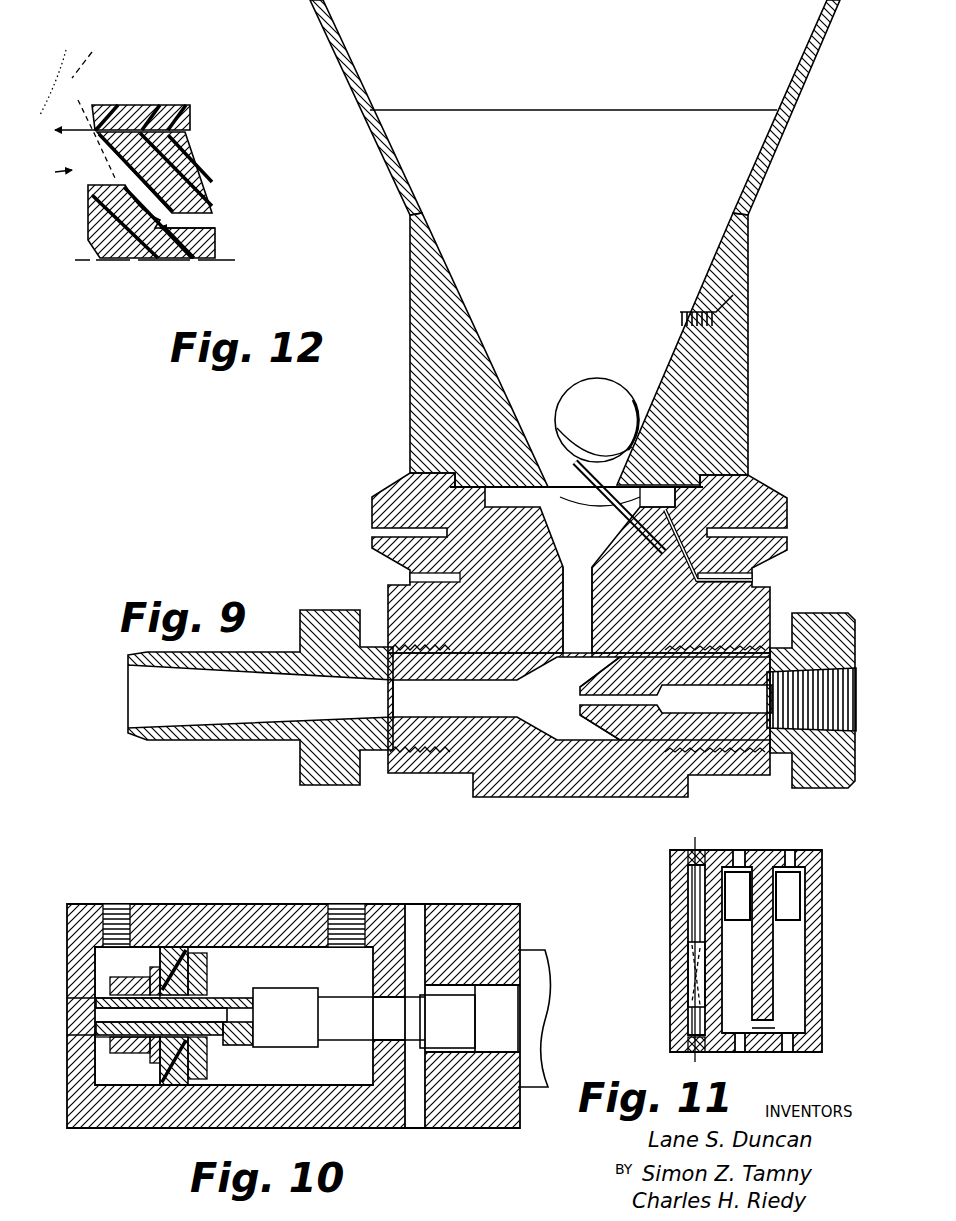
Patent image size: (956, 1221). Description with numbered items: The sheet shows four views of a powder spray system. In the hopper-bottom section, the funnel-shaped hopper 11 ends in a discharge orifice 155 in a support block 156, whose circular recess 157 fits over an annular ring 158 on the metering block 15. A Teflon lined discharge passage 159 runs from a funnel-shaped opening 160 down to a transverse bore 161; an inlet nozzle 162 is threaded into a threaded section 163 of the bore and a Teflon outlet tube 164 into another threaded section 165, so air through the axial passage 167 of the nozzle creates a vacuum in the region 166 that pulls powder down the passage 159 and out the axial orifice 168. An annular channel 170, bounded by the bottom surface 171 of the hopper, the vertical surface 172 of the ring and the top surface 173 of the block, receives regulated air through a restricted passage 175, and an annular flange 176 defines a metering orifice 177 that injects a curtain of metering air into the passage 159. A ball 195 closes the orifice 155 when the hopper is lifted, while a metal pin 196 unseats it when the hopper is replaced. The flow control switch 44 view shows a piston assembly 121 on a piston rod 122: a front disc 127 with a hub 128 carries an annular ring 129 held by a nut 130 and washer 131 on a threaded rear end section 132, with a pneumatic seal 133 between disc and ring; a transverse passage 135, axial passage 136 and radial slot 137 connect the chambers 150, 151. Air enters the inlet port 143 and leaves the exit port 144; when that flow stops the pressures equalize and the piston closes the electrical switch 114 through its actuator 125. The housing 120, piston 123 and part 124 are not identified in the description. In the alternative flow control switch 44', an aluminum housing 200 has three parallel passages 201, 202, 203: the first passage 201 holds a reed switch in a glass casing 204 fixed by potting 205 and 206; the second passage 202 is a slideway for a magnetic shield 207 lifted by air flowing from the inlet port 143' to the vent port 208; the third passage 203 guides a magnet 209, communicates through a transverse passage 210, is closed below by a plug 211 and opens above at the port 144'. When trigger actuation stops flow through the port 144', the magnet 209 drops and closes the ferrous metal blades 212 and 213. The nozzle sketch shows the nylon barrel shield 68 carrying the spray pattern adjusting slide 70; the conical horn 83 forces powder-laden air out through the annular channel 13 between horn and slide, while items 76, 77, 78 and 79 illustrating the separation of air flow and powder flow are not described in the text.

In FIG. 9, the hopper 11 is at (806, 78).
In FIG. 12, the annular channel 13 is at (112, 200).
In FIG. 9, the metering block 15 is at (383, 568).
In FIG. 10, the flow control switch 44 is at (390, 1177).
In FIG. 11, the flow control switch 44' is at (888, 843).
In FIG. 12, the nylon barrel shield 68 is at (170, 105).
In FIG. 12, the spray pattern adjusting block 70 is at (165, 178).
In FIG. 12, the travel path 76 is at (78, 74).
In FIG. 12, the direction of movement 77 is at (57, 134).
In FIG. 12, the direction of movement 78 is at (80, 144).
In FIG. 12, the edge 79 is at (113, 105).
In FIG. 12, the horn 83 is at (126, 252).
In FIG. 10, the electrical switch 114 is at (538, 1010).
In FIG. 10, the cylinder housing 120 is at (258, 912).
In FIG. 10, the piston assembly 121 is at (242, 968).
In FIG. 10, the piston rod 122 is at (339, 1017).
In FIG. 10, the piston 123 is at (416, 1027).
In FIG. 10, the cylinder wall 124 is at (386, 1058).
In FIG. 10, the actuator 125 is at (485, 1030).
In FIG. 10, the front disc 127 is at (190, 990).
In FIG. 10, the hub 128 is at (232, 1005).
In FIG. 10, the annular ring 129 is at (170, 947).
In FIG. 10, the nut 130 is at (110, 1087).
In FIG. 10, the washer 131 is at (150, 1087).
In FIG. 10, the threaded rear end section 132 is at (98, 1050).
In FIG. 10, the pneumatic seal 133 is at (207, 1065).
In FIG. 10, the transverse passage 135 is at (232, 1032).
In FIG. 10, the axial passage 136 is at (232, 1018).
In FIG. 10, the radial slot 137 is at (98, 1015).
In FIG. 10, the cylinder inlet port 143 is at (371, 909).
In FIG. 11, the inlet port 143' is at (739, 1066).
In FIG. 10, the exit port 144 is at (127, 907).
In FIG. 11, the outlet port 144' is at (801, 838).
In FIG. 10, the chamber 150 is at (342, 972).
In FIG. 10, the chamber 151 is at (112, 957).
In FIG. 9, the discharge orifice 155 is at (548, 475).
In FIG. 9, the support block 156 is at (727, 398).
In FIG. 9, the circular recess 157 is at (705, 505).
In FIG. 9, the annular ring 158 is at (700, 488).
In FIG. 9, the discharge passage 159 is at (560, 612).
In FIG. 9, the funnel-shaped opening 160 is at (590, 580).
In FIG. 9, the transverse bore 161 is at (536, 745).
In FIG. 9, the inlet nozzle 162 is at (840, 652).
In FIG. 9, the threaded section 163 is at (745, 758).
In FIG. 9, the Teflon outlet tube 164 is at (285, 745).
In FIG. 9, the threaded section 165 is at (422, 760).
In FIG. 9, the region 166 is at (572, 712).
In FIG. 9, the axial passage 167 is at (699, 703).
In FIG. 9, the axial orifice 168 is at (425, 703).
In FIG. 9, the annular channel 170 is at (655, 450).
In FIG. 9, the bottom surface 171 is at (505, 430).
In FIG. 9, the vertical surface 172 is at (390, 476).
In FIG. 9, the top surface 173 is at (500, 522).
In FIG. 9, the restricted passage 175 is at (752, 580).
In FIG. 9, the annular flange 176 is at (495, 452).
In FIG. 9, the annular metering orifice 177 is at (530, 470).
In FIG. 9, the ball 195 is at (602, 400).
In FIG. 9, the metal pin 196 is at (602, 510).
In FIG. 11, the aluminum housing 200 is at (822, 948).
In FIG. 11, the first passage 201 is at (688, 926).
In FIG. 11, the second passage 202 is at (740, 945).
In FIG. 11, the third passage 203 is at (790, 990).
In FIG. 11, the glass casing 204 is at (688, 996).
In FIG. 11, the potting 205 is at (678, 1045).
In FIG. 11, the potting 206 is at (678, 860).
In FIG. 11, the magnetic shield 207 is at (760, 852).
In FIG. 11, the vent port 208 is at (738, 852).
In FIG. 11, the magnet 209 is at (790, 890).
In FIG. 11, the transverse passage 210 is at (772, 1030).
In FIG. 11, the plug 211 is at (788, 1053).
In FIG. 11, the ferrous metal blade 212 is at (690, 975).
In FIG. 11, the ferrous metal blade 213 is at (690, 958).